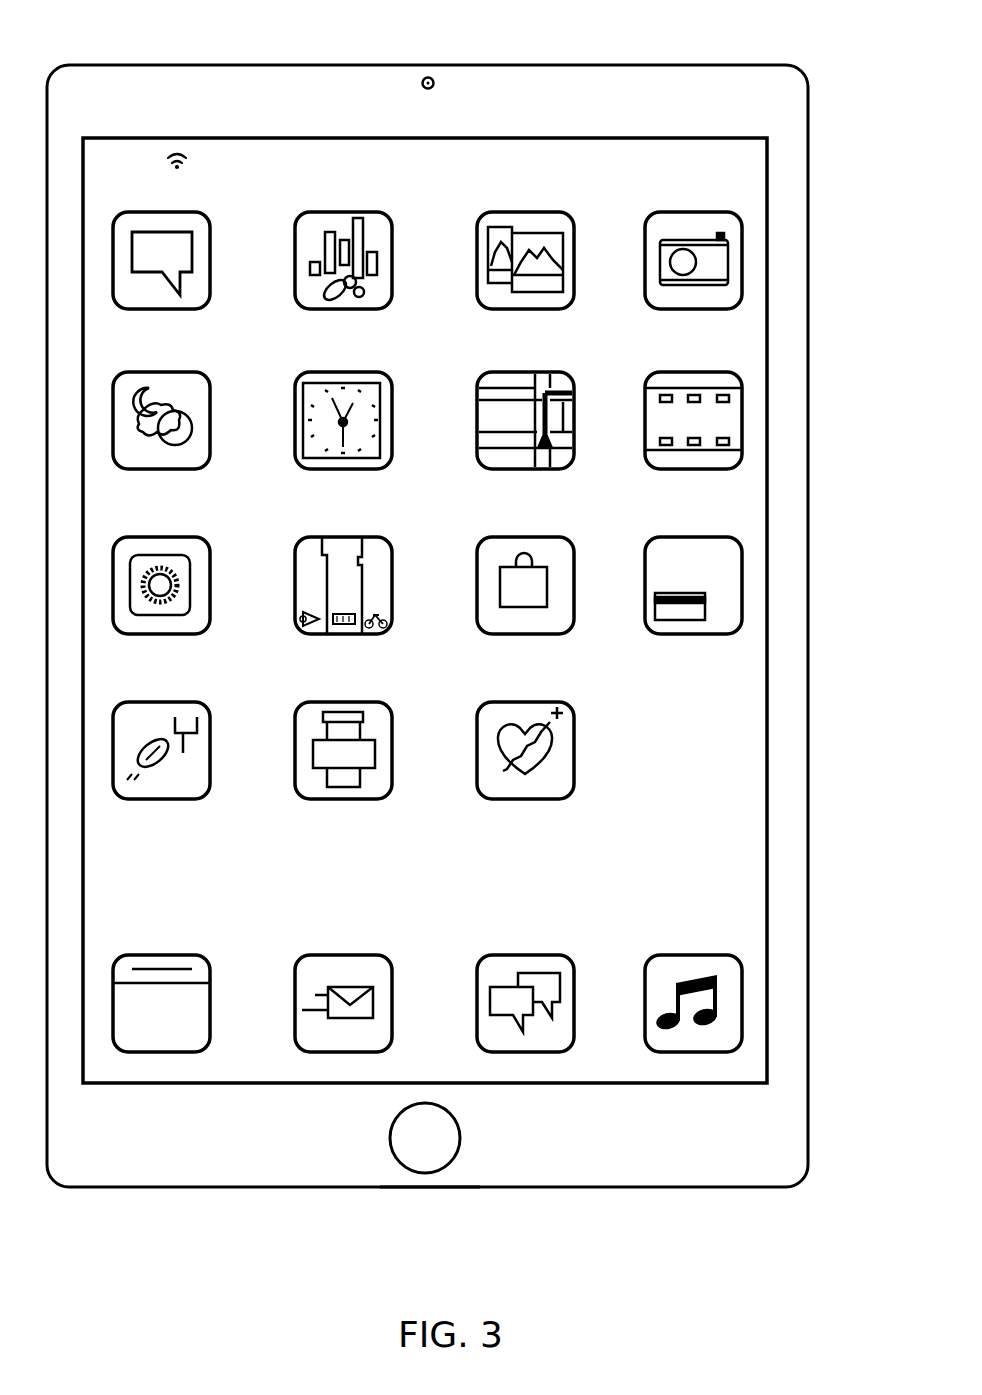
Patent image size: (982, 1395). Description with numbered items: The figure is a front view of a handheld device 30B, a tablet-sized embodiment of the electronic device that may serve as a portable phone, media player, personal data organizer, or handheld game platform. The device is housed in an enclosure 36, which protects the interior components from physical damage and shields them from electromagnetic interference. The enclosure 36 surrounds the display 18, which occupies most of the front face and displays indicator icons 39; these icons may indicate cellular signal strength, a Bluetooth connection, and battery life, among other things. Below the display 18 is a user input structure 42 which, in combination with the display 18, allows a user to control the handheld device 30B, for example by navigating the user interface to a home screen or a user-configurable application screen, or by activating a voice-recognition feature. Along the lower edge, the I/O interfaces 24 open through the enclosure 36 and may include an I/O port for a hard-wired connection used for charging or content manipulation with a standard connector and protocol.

The handheld device 30B is at (188, 42).
The enclosure 36 is at (742, 64).
The display 18 is at (772, 819).
The indicator icons 39 is at (408, 183).
The user input structures 42 is at (461, 1141).
The I/O interfaces 24 is at (430, 1188).